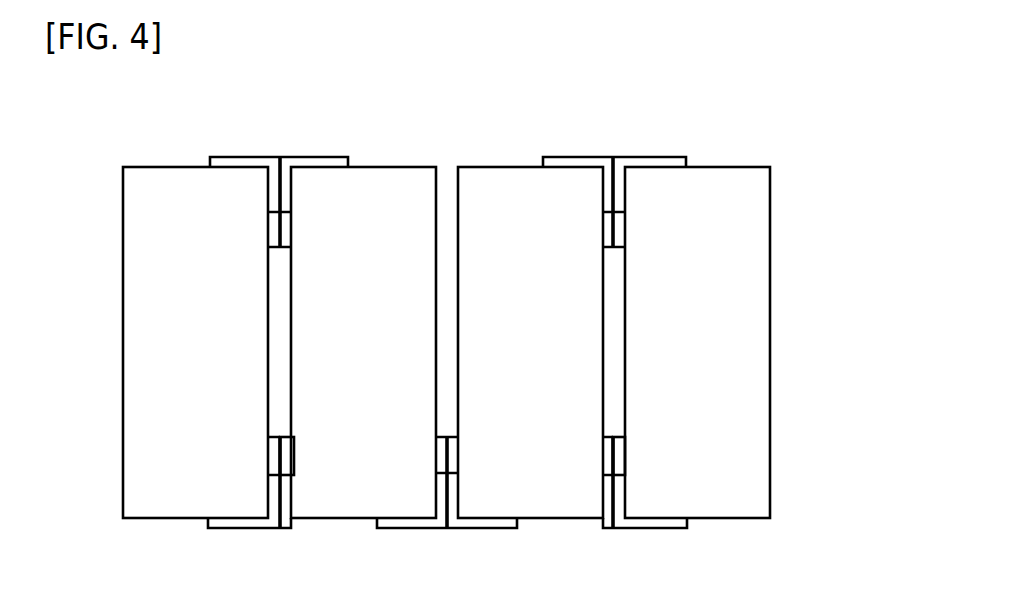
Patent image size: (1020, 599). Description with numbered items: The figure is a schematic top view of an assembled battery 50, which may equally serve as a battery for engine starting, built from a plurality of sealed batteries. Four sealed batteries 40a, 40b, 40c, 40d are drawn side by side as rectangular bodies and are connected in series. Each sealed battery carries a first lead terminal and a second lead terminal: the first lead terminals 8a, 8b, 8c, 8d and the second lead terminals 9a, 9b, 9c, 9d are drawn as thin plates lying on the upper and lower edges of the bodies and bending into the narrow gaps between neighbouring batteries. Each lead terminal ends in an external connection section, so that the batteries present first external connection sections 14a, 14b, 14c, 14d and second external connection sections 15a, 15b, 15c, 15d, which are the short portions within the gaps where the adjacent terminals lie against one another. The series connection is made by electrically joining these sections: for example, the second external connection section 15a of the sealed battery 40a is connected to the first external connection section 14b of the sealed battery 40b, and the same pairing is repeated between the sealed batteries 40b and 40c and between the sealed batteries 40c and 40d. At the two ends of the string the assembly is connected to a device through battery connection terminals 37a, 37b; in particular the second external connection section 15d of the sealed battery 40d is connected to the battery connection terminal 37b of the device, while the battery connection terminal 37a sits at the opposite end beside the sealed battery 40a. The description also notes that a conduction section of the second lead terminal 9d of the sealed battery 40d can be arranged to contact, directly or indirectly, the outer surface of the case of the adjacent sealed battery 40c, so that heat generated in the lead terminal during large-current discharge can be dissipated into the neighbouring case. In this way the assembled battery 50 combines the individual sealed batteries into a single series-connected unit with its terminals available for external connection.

The assembled battery 50 is at (775, 122).
The sealed battery 40a is at (188, 375).
The sealed battery 40b is at (368, 220).
The sealed battery 40c is at (503, 217).
The sealed battery 40d is at (710, 382).
The first lead terminal 8a is at (257, 523).
The first lead terminal 8b is at (303, 163).
The first lead terminal 8c is at (457, 522).
The first lead terminal 8d is at (630, 162).
The second lead terminal 9a is at (254, 163).
The second lead terminal 9b is at (418, 522).
The second lead terminal 9c is at (578, 162).
The second lead terminal 9d is at (623, 523).
The first external connection section 14a is at (275, 458).
The first external connection section 14b is at (287, 230).
The first external connection section 14c is at (457, 458).
The first external connection section 14d is at (620, 230).
The second external connection section 15a is at (273, 230).
The second external connection section 15b is at (438, 458).
The second external connection section 15c is at (608, 230).
The second external connection section 15d is at (610, 453).
The battery connection terminal 37a is at (285, 453).
The battery connection terminal 37b is at (618, 453).